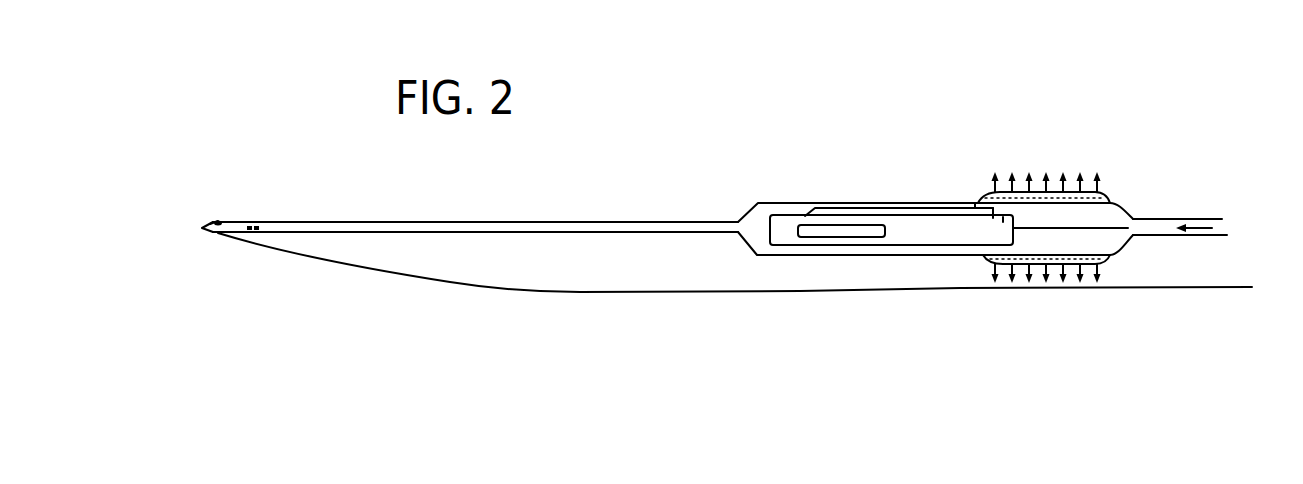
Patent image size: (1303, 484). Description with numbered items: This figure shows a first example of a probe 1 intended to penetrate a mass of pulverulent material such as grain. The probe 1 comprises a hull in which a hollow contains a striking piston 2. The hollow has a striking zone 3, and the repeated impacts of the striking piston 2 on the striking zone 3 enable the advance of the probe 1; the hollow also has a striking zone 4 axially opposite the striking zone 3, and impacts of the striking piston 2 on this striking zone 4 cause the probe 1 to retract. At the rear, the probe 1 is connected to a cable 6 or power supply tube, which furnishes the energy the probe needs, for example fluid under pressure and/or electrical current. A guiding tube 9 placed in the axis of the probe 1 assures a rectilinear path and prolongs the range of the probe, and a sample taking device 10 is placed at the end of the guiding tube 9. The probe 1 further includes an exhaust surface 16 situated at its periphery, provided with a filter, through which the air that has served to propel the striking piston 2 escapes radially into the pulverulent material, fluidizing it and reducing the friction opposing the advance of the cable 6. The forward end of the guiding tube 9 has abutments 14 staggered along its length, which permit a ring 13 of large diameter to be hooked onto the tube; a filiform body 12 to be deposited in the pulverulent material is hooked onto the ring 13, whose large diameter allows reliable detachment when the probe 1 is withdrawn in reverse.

The probe 1 is at (840, 194).
The striking piston 2 is at (887, 231).
The striking zone 3 is at (783, 218).
The striking zone 4 is at (984, 203).
The cable 6 is at (1212, 219).
The guiding tube 9 is at (497, 222).
The sample taking device 10 is at (263, 222).
The filiform body 12 is at (543, 292).
The ring 13 is at (216, 222).
The abutments 14 is at (224, 224).
The exhaust surface 16 is at (1100, 193).